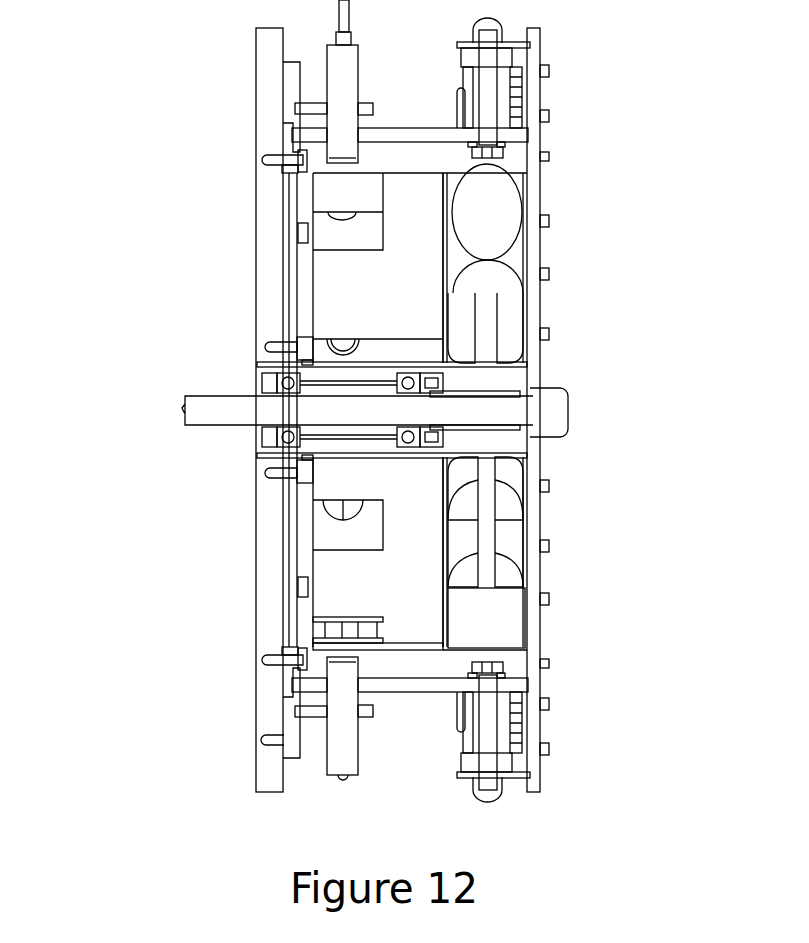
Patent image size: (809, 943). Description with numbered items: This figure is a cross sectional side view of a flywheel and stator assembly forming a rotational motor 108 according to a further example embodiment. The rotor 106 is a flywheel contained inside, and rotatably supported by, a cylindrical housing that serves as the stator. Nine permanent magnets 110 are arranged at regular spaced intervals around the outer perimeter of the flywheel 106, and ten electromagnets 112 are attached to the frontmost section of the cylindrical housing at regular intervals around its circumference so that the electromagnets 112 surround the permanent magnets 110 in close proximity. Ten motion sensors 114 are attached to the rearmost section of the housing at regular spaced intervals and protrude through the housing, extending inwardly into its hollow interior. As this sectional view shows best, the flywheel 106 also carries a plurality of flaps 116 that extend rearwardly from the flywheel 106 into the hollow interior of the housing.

The rotor 106 is at (510, 317).
The rotational motor 108 is at (165, 172).
The permanent magnets 110 is at (487, 212).
The electromagnets 112 is at (490, 58).
The motion sensors 114 is at (340, 88).
The flaps 116 is at (347, 298).